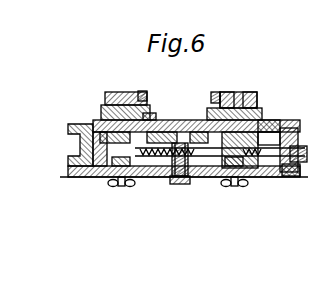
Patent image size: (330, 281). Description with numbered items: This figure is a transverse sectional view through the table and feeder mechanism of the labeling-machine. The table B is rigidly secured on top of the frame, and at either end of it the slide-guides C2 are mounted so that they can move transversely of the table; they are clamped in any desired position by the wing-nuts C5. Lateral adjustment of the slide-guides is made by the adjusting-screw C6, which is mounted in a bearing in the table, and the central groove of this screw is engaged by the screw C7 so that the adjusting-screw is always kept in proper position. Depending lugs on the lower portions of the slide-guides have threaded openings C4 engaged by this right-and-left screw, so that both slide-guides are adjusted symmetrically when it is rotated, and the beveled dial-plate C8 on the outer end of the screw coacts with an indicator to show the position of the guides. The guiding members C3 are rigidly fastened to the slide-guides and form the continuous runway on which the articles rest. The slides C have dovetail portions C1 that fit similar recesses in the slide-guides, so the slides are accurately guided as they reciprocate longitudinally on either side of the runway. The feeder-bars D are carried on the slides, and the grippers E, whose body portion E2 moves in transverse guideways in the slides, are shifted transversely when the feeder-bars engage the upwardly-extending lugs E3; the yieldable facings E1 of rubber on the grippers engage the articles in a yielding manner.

The table B is at (93, 124).
The slide C is at (260, 120).
The dovetail portion C1 is at (263, 120).
The slide-guide C2 is at (284, 136).
The guiding member C3 is at (215, 118).
The threaded opening C4 is at (248, 166).
The wing-nut C5 is at (233, 184).
The adjusting-screw C6 is at (197, 163).
The screw C7 is at (170, 178).
The beveled dial-plate C8 is at (298, 170).
The feeder-bar D is at (245, 93).
The gripper E is at (232, 92).
The yieldable facing E1 is at (222, 82).
The body portion E2 is at (252, 115).
The upwardly-extending lug E3 is at (257, 96).